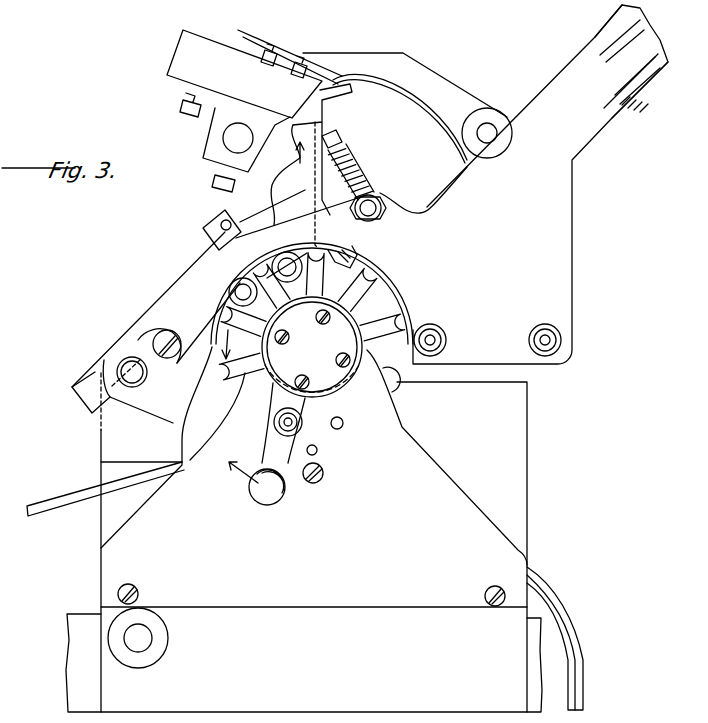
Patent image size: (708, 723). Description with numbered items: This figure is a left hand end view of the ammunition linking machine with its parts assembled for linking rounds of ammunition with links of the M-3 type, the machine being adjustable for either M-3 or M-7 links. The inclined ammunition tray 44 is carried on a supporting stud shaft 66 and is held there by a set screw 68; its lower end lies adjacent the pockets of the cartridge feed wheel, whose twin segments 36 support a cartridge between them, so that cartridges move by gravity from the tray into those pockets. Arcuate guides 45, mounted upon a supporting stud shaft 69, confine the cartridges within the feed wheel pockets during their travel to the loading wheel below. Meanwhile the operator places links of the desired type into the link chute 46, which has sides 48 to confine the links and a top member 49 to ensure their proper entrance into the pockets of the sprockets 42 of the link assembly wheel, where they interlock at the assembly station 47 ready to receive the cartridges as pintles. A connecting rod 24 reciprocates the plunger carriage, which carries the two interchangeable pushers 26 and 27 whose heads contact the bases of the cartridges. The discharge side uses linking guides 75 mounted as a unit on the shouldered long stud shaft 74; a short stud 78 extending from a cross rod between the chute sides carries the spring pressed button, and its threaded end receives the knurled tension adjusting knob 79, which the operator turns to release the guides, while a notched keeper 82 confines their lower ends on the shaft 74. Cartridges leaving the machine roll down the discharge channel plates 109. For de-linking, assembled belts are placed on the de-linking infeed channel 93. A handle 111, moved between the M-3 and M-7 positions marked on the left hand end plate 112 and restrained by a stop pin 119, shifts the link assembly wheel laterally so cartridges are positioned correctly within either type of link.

The ammunition tray 44 is at (190, 52).
The arcuate guides 45 is at (396, 52).
The link chute sides 48 is at (412, 118).
The top member 49 is at (607, 33).
The link chute 46 is at (640, 93).
The supporting stud shaft 66 is at (238, 138).
The short stud 78 is at (329, 149).
The knurled tension adjusting knob 79 is at (346, 146).
The supporting stud shaft 69 is at (484, 138).
The set screw 68 is at (213, 182).
The connecting rod 24 is at (206, 249).
The pusher 26 is at (292, 202).
The twin segments 36 is at (300, 197).
The assembly station 47 is at (353, 256).
The linking guides 75 is at (167, 287).
The pusher 27 is at (234, 293).
The sprockets 42 is at (401, 321).
The long stud shaft 74 is at (131, 364).
The notched keeper 82 is at (86, 393).
The M-3 link M-3 is at (271, 426).
The M-7 link M-7 is at (352, 426).
The stop pin 119 is at (318, 451).
The discharge channel plates 109 is at (72, 495).
The handle 111 is at (277, 502).
The left hand end plate 112 is at (380, 606).
The de-linking infeed channel 93 is at (592, 640).